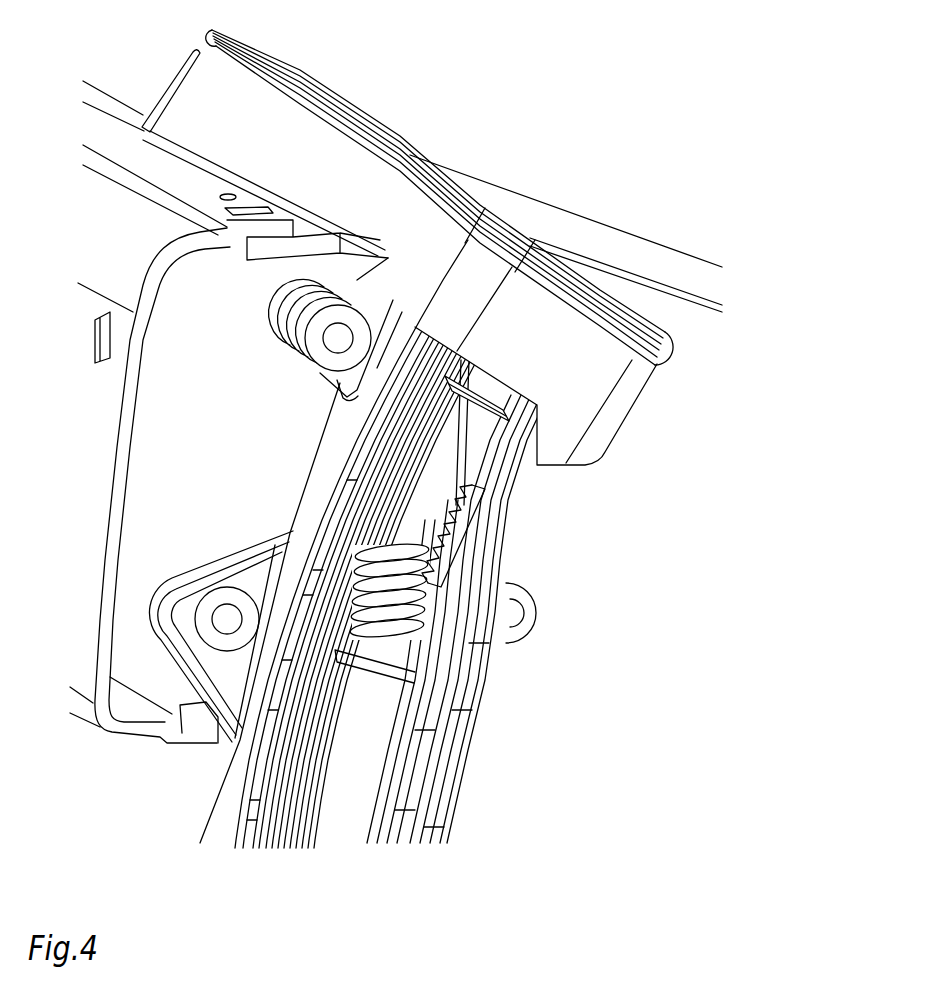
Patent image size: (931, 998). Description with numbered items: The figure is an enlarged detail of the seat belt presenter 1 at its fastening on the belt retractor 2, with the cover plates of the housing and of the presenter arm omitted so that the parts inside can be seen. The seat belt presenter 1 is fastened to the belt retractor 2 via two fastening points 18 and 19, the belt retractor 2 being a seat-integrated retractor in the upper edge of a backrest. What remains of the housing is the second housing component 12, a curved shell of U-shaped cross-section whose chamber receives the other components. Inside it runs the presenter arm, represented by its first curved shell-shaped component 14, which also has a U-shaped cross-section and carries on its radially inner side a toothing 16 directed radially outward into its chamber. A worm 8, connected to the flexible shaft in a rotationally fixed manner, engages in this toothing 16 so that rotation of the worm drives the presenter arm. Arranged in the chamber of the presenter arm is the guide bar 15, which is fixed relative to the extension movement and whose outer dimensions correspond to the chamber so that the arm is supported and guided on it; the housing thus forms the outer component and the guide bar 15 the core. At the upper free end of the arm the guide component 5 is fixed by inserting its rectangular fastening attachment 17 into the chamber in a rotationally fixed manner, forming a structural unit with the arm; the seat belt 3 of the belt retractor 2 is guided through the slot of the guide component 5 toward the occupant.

The seat belt presenter 1 is at (645, 446).
The belt retractor 2 is at (160, 442).
The seat belt 3 is at (565, 223).
The guide component 5 is at (367, 197).
The worm 8 is at (425, 592).
The second housing component 12 is at (437, 820).
The first curved shell-shaped component 14 is at (420, 750).
The guide bar 15 is at (380, 707).
The toothing 16 is at (453, 527).
The fastening attachment 17 is at (488, 393).
The fastening point 18 is at (220, 617).
The fastening point 19 is at (317, 335).